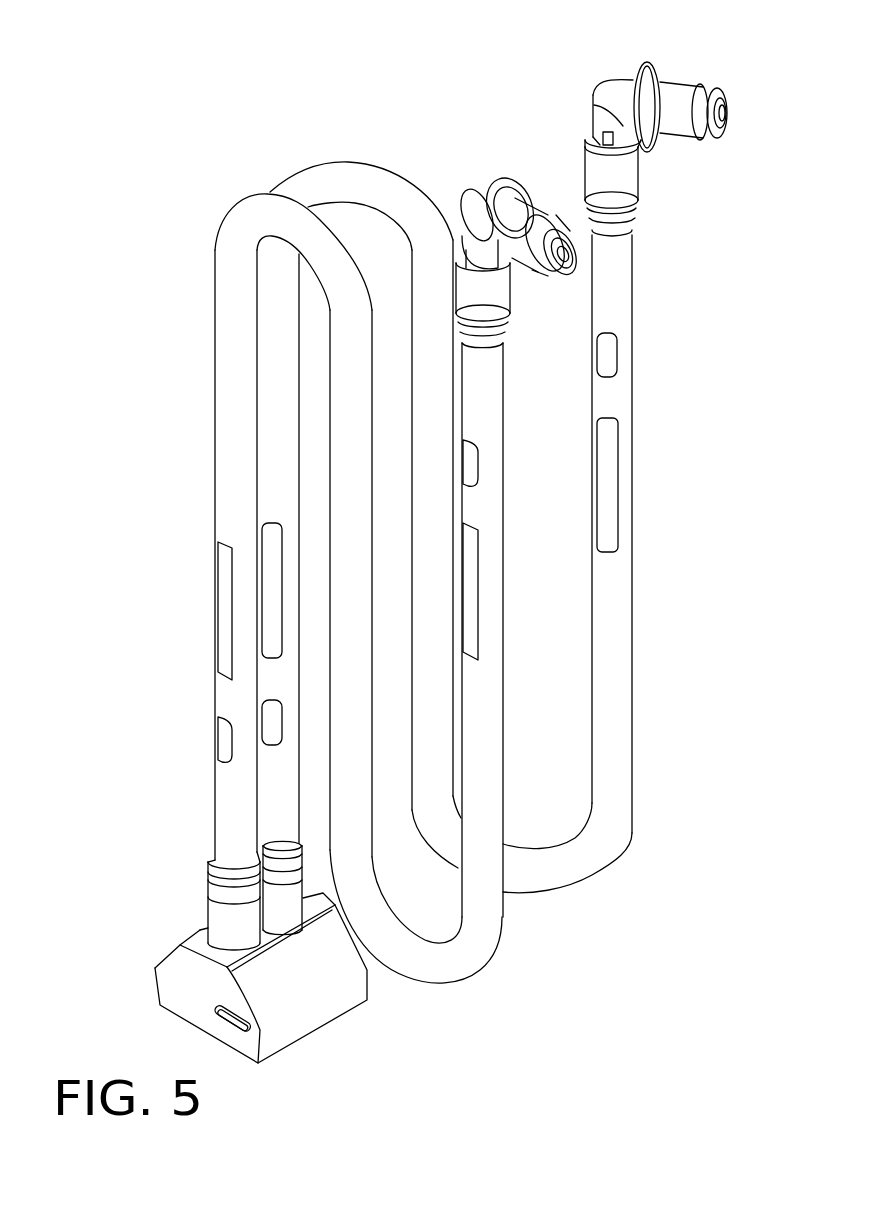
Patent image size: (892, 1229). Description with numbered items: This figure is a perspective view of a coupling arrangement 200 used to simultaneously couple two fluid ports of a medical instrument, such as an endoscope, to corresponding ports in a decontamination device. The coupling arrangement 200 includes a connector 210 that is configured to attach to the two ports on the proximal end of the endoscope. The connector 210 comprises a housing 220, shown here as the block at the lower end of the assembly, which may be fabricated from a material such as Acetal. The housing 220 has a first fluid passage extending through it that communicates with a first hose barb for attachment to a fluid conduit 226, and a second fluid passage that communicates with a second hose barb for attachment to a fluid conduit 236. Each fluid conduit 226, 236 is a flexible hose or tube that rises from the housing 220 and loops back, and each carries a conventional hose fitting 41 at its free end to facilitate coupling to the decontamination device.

The coupling arrangement 200 is at (178, 580).
The fluid conduit 226 is at (232, 403).
The fluid conduit 236 is at (613, 605).
The hose fitting 41 is at (520, 157).
The connector 210 is at (140, 952).
The housing 220 is at (323, 1013).